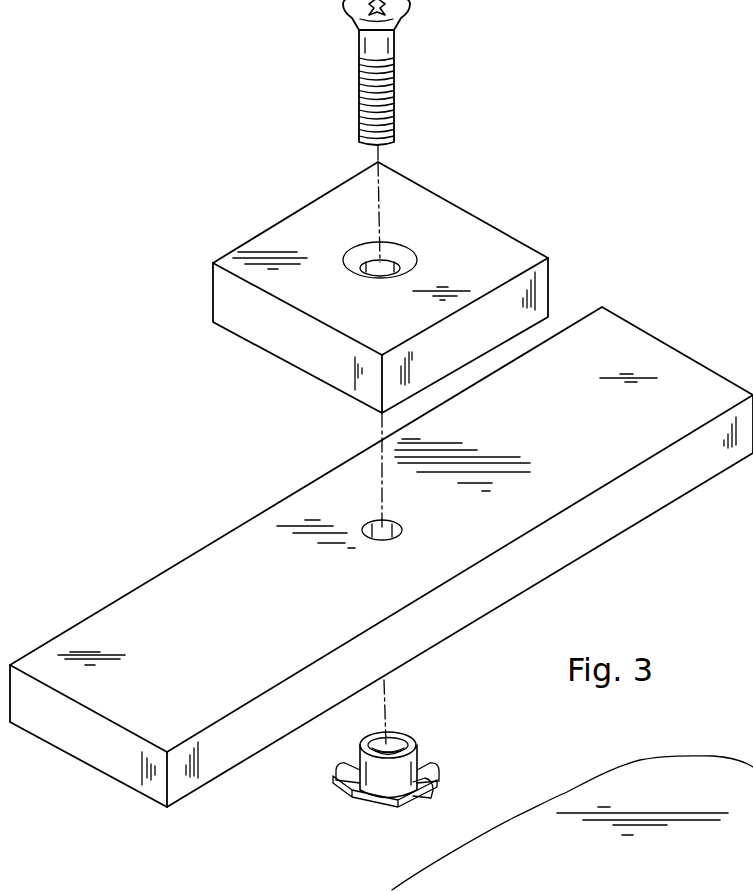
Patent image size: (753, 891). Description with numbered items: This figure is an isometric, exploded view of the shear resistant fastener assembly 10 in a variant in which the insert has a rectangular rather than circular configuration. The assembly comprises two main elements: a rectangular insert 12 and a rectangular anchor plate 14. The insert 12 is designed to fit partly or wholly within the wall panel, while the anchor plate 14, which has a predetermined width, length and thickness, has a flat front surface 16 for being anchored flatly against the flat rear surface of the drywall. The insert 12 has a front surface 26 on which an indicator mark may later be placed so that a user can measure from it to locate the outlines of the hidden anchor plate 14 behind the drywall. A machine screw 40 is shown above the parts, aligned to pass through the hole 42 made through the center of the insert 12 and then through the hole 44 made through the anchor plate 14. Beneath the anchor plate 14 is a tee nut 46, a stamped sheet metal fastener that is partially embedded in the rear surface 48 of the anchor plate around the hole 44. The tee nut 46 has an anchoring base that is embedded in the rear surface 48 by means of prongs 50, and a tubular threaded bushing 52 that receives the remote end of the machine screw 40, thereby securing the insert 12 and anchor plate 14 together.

The shear resistant fastener assembly 10 is at (148, 407).
The insert 12 is at (287, 215).
The anchor plate 14 is at (163, 572).
The flat front surface 16 is at (617, 340).
The front surface 26 is at (483, 253).
The machine screw 40 is at (396, 48).
The hole 42 is at (392, 267).
The hole 44 is at (391, 532).
The tee nut 46 is at (340, 775).
The rear surface 48 is at (635, 525).
The prongs 50 is at (438, 776).
The tubular threaded bushing 52 is at (378, 779).